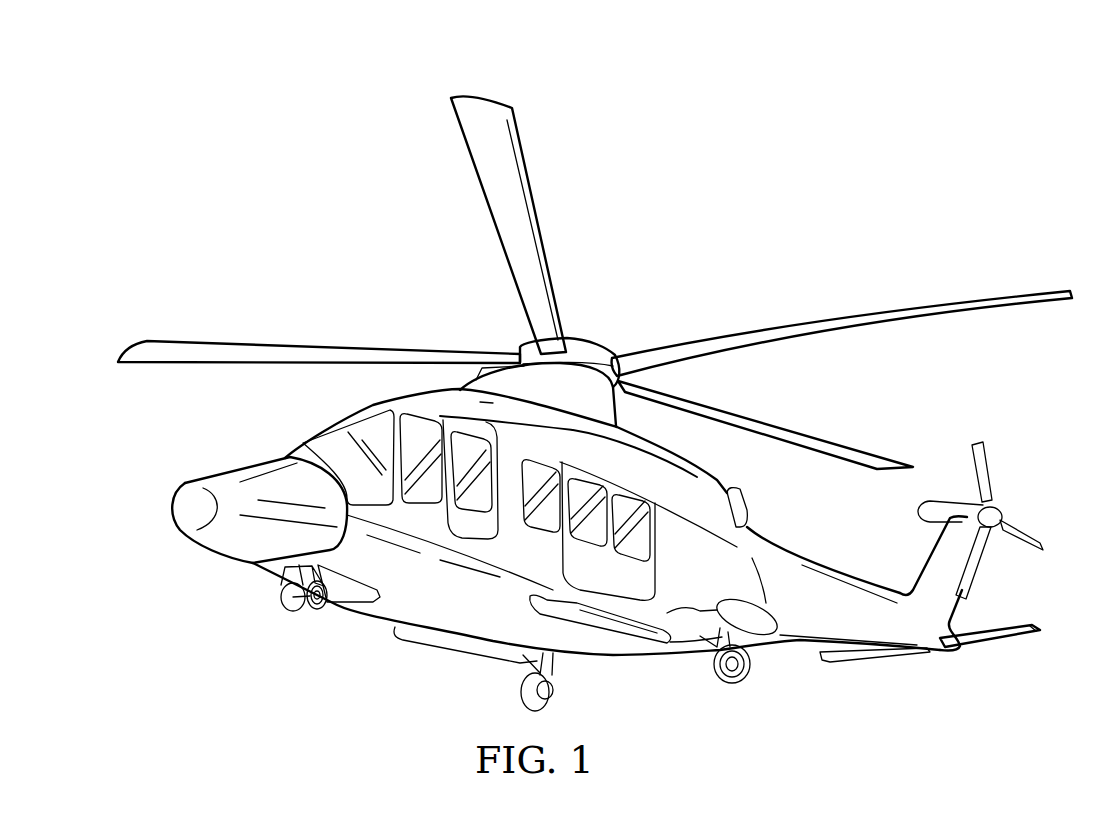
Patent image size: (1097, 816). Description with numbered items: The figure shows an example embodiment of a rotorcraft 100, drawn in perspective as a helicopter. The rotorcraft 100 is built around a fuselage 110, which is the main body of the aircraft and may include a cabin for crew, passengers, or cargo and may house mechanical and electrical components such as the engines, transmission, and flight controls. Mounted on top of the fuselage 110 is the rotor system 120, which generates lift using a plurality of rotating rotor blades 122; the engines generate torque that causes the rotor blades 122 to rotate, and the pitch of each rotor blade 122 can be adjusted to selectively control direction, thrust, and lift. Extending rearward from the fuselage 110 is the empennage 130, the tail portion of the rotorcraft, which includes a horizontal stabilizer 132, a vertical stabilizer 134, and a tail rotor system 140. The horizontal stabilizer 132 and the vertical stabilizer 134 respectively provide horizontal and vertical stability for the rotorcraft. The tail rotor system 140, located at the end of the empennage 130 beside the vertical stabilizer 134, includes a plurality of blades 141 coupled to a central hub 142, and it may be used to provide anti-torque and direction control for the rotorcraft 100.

The rotorcraft 100 is at (258, 81).
The fuselage 110 is at (392, 608).
The rotor system 120 is at (608, 309).
The rotor blade 122 is at (827, 336).
The empennage 130 is at (800, 633).
The horizontal stabilizer 132 is at (1010, 642).
The vertical stabilizer 134 is at (925, 557).
The tail rotor system 140 is at (1022, 434).
The blade 141 is at (1028, 551).
The hub 142 is at (1000, 513).